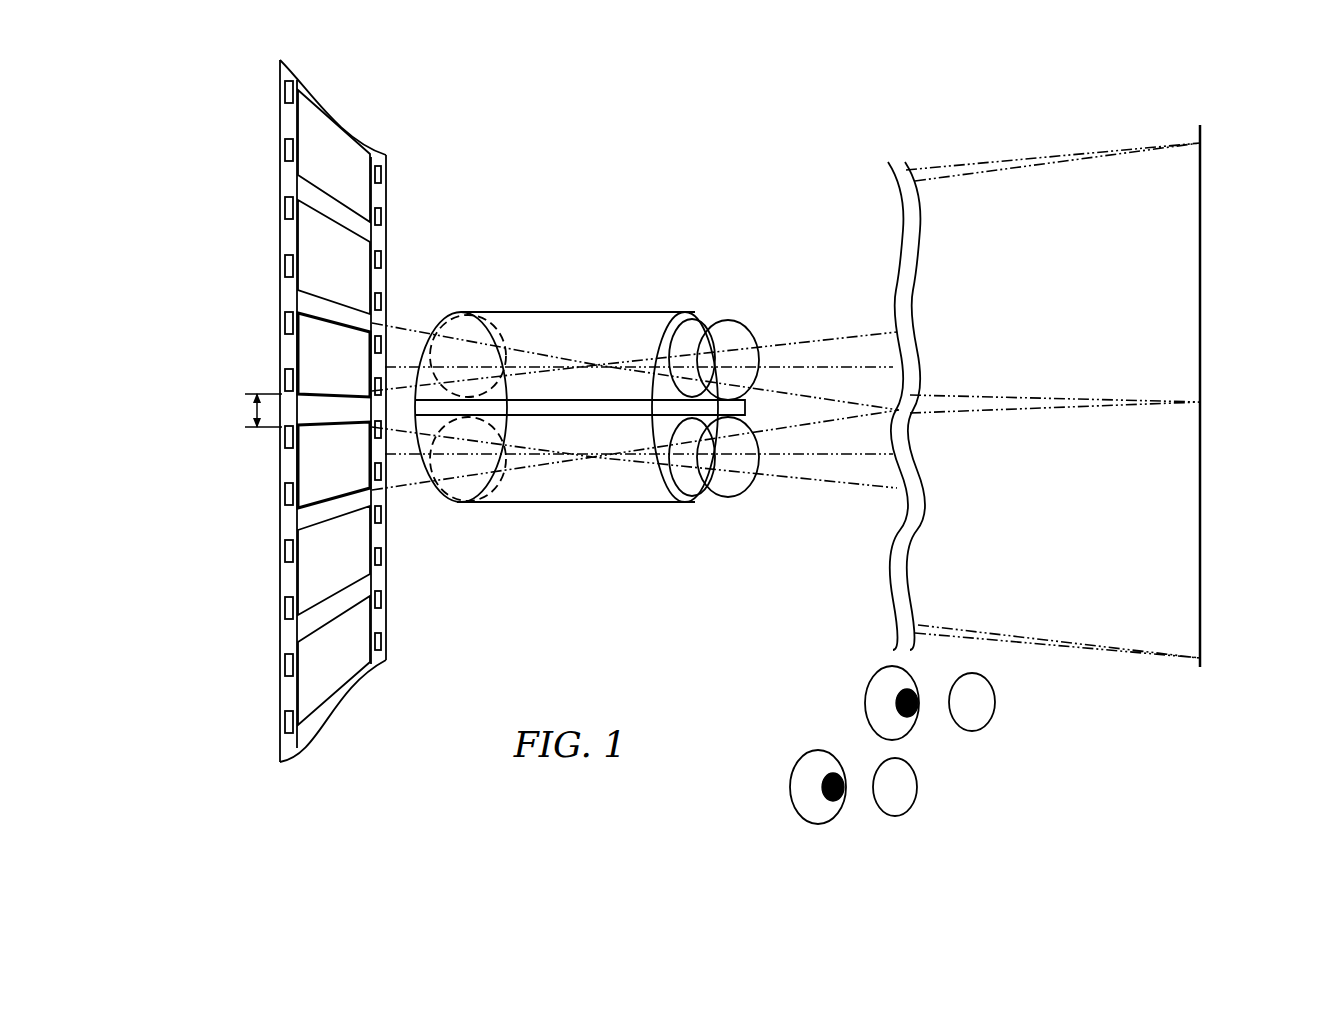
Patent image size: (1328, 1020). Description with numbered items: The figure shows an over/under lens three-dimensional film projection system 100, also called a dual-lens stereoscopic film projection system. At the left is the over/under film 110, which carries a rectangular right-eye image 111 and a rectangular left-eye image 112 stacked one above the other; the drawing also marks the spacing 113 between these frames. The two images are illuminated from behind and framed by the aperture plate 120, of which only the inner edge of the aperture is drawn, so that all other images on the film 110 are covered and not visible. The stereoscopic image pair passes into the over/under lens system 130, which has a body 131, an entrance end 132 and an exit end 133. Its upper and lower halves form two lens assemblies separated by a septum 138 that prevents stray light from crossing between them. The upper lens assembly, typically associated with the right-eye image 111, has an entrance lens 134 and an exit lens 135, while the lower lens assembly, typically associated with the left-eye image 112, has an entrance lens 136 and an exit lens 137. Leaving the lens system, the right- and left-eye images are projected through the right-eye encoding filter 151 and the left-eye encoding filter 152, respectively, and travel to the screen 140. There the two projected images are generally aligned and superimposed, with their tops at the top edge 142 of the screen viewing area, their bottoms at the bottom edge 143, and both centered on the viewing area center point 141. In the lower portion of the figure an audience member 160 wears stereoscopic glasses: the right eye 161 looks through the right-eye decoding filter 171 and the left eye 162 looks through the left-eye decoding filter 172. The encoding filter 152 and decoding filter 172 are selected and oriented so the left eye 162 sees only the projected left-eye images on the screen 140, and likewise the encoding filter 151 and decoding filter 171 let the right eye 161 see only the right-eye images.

The over/under lens 3D film projection system 100 is at (428, 132).
The over/under 3D film 110 is at (357, 712).
The right-eye image 111 is at (302, 353).
The left-eye image 112 is at (302, 472).
The frame separation 113 is at (253, 413).
The aperture plate 120 is at (284, 385).
The over/under lens system 130 is at (532, 204).
The body 131 is at (532, 312).
The entrance end 132 is at (437, 328).
The exit end 133 is at (663, 347).
The entrance lens 134 is at (460, 318).
The exit lens 135 is at (695, 320).
The entrance lens 136 is at (460, 502).
The exit lens 137 is at (678, 493).
The septum 138 is at (565, 398).
The screen 140 is at (1202, 272).
The viewing area center point 141 is at (1198, 401).
The top edge 142 is at (1198, 142).
The bottom edge 143 is at (1198, 656).
The right-eye encoding filter 151 is at (730, 322).
The left-eye encoding filter 152 is at (722, 496).
The audience member 160 is at (767, 689).
The right eye 161 is at (803, 757).
The left eye 162 is at (882, 670).
The right-eye decoding filter 171 is at (917, 778).
The left-eye decoding filter 172 is at (995, 699).